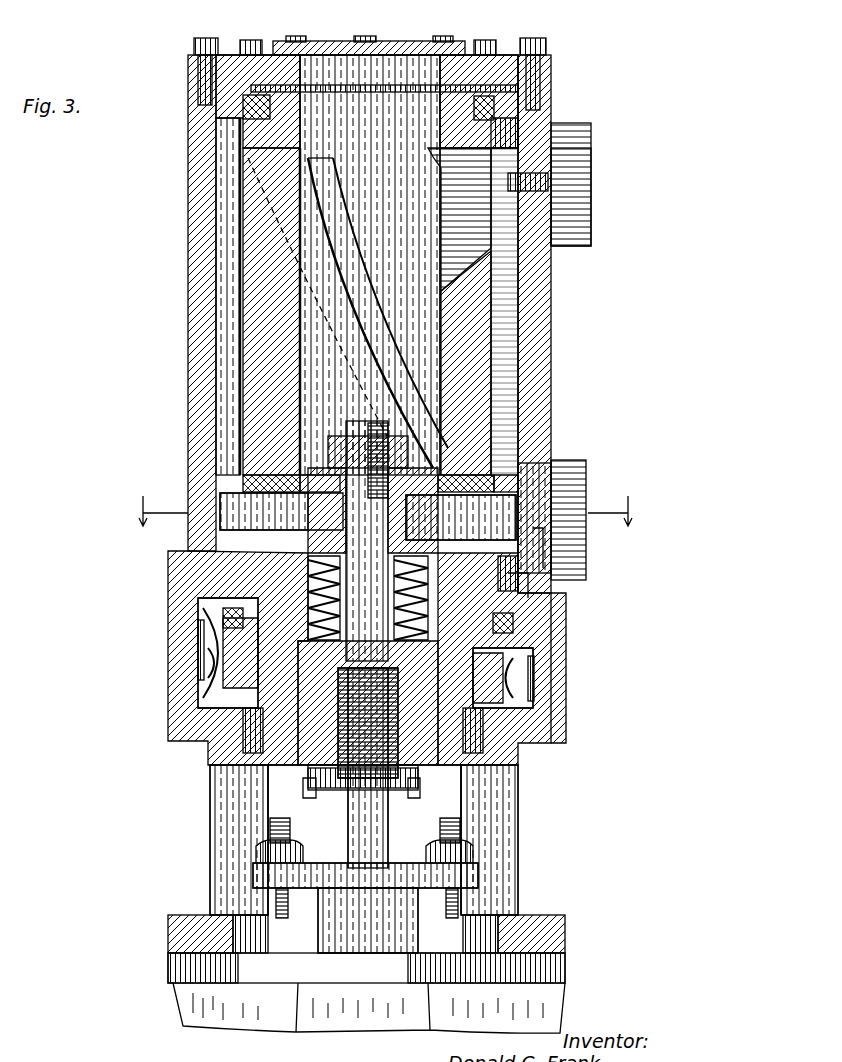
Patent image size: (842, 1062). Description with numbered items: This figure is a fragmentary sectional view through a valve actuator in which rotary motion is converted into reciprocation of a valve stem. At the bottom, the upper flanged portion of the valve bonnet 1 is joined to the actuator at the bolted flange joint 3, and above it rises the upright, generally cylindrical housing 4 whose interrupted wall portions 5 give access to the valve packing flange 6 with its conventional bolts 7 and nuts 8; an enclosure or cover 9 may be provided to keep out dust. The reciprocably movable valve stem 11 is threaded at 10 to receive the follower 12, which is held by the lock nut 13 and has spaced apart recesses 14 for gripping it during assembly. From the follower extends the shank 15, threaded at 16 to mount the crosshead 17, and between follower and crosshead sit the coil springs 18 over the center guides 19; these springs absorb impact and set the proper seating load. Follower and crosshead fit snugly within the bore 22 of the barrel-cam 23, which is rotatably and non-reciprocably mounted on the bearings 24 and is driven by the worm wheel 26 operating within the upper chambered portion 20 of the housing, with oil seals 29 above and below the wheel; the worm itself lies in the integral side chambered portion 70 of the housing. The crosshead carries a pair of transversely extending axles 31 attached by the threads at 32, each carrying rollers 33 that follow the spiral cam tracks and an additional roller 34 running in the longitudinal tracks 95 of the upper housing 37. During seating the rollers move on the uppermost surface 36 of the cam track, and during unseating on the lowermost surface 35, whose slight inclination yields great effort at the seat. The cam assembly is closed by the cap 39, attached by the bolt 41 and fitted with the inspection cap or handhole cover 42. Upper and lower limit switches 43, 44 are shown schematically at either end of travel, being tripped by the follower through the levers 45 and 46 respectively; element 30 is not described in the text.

The upper fragmentary flanged portion of valve bonnet 1 is at (225, 960).
The bolted flange joint 3 is at (170, 937).
The housing 4 is at (573, 692).
The interrupted wall portions 5 is at (445, 803).
The valve packing flange 6 is at (400, 857).
The bolts 7 is at (265, 815).
The nuts 8 is at (250, 842).
The enclosure or cover 9 is at (200, 862).
The threads 10 is at (342, 800).
The valve stem 11 is at (388, 830).
The follower 12 is at (312, 782).
The lock nut 13 is at (410, 790).
The spaced apart recesses 14 is at (300, 762).
The shank or extension 15 is at (348, 528).
The threads 16 is at (355, 414).
The crosshead 17 is at (402, 440).
The coil springs 18 is at (425, 577).
The center guides 19 is at (425, 613).
The upper chambered portion 20 is at (195, 672).
The bore 22 is at (432, 310).
The barrel-cam 23 is at (478, 320).
The bearings 24 is at (246, 100).
The worm wheel 26 is at (210, 625).
The oil seals 29 is at (225, 612).
The link 30 is at (380, 455).
The transversely extending axles 31 is at (215, 502).
The threads 32 is at (296, 497).
The rollers 33 is at (240, 468).
The additional roller 34 is at (262, 470).
The lowermost surface of cam track 35 is at (300, 560).
The uppermost surface of cam track 36 is at (240, 142).
The upper housing 37 is at (181, 197).
The cap 39 is at (238, 44).
The bolt 41 is at (187, 40).
The inspection cap or handhole cover 42 is at (398, 44).
The upper limit switch 43 is at (584, 140).
The lower limit switch 44 is at (580, 468).
The lever 45 is at (540, 180).
The lever 46 is at (510, 585).
The side chambered portion 70 is at (190, 735).
The longitudinal tracks 95 is at (222, 262).